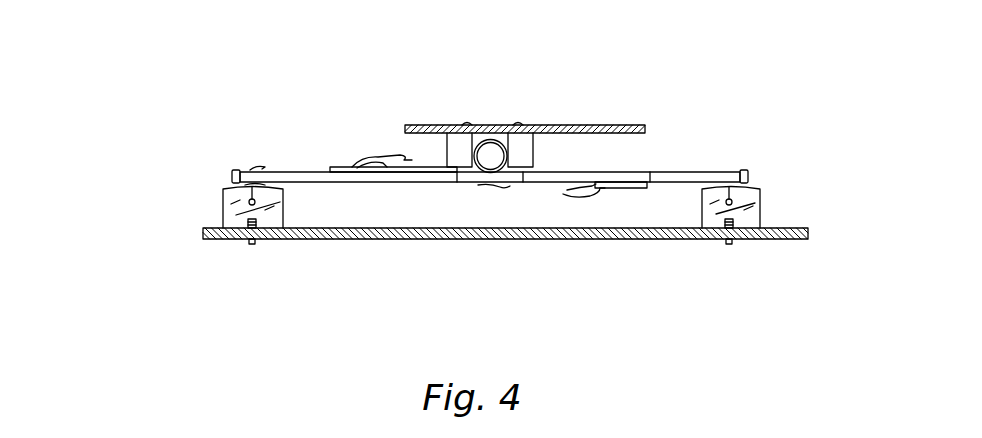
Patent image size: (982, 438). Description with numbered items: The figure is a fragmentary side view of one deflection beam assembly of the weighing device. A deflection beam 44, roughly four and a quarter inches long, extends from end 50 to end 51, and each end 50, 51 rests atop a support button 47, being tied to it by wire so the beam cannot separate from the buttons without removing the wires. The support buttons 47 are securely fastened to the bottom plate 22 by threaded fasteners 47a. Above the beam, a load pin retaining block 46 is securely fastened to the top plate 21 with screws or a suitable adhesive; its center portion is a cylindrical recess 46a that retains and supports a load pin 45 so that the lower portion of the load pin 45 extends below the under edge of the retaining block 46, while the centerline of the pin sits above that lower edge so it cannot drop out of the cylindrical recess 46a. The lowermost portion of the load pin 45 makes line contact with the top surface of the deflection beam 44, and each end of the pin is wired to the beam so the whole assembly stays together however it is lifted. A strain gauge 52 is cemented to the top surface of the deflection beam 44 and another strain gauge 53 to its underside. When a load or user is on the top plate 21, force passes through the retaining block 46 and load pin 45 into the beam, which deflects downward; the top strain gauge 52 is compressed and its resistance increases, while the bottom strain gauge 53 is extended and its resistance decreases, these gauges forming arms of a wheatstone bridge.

The top plate 21 is at (578, 127).
The bottom plate 22 is at (447, 240).
The deflection beam 44 is at (402, 178).
The load pin 45 is at (500, 142).
The load pin retaining block 46 is at (445, 142).
The cylindrical recess 46a is at (493, 152).
The support button 47 is at (223, 190).
The threaded fastener 47a is at (250, 240).
The end 50 is at (233, 172).
The end 51 is at (748, 178).
The strain gauge 52 is at (333, 173).
The strain gauge 53 is at (647, 188).